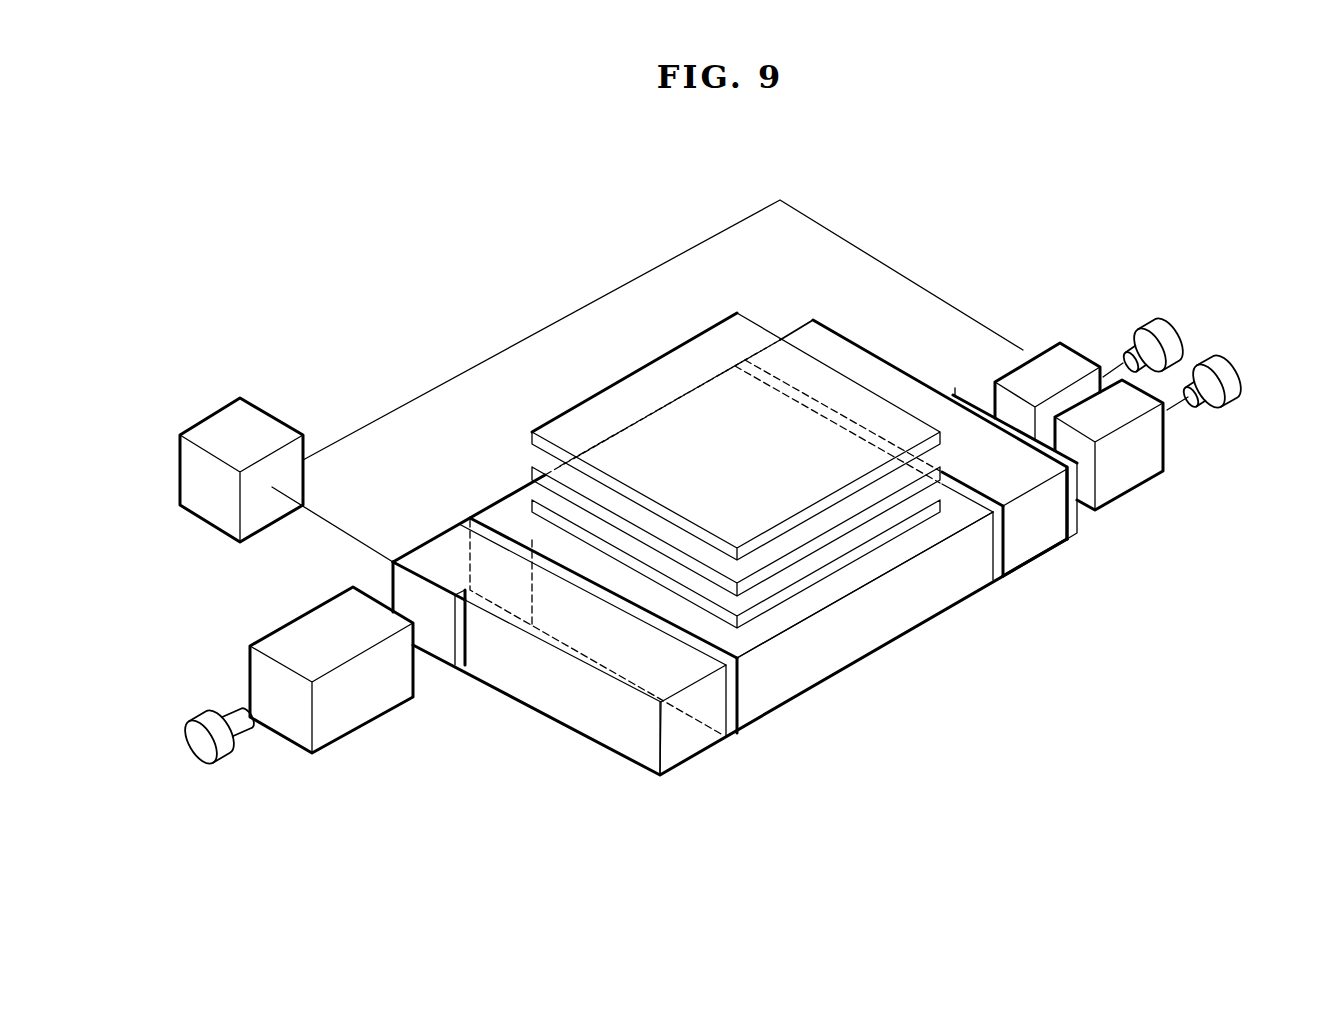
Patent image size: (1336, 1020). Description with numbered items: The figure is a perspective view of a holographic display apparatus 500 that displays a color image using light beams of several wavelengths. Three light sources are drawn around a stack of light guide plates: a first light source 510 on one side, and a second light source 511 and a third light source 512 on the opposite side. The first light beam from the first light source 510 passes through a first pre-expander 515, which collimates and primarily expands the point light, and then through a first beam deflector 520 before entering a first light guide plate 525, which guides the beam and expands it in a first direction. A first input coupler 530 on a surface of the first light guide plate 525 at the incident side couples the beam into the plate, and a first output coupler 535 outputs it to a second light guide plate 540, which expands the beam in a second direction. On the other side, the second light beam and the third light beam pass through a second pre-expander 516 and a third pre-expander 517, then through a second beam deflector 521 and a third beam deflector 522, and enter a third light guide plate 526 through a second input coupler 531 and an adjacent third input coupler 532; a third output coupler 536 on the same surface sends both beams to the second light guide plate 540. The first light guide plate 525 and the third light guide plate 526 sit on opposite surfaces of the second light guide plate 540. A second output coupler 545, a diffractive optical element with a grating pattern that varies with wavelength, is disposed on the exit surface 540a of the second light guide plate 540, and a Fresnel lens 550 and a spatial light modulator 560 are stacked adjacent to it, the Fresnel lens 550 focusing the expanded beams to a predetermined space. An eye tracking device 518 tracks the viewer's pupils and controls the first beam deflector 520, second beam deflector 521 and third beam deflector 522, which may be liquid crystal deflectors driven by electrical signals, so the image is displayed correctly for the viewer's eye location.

The holographic display apparatus 500 is at (360, 305).
The first light source 510 is at (208, 723).
The second light source 511 is at (1220, 360).
The third light source 512 is at (1153, 327).
The first pre-expander 515 is at (312, 620).
The second pre-expander 516 is at (1132, 480).
The third pre-expander 517 is at (1048, 357).
The eye tracking device 518 is at (220, 417).
The first beam deflector 520 is at (445, 655).
The second beam deflector 521 is at (1072, 522).
The third beam deflector 522 is at (955, 397).
The first light guide plate 525 is at (677, 748).
The third light guide plate 526 is at (1038, 545).
The first input coupler 530 is at (473, 513).
The second input coupler 531 is at (1000, 570).
The third input coupler 532 is at (885, 443).
The first output coupler 535 is at (728, 693).
The third output coupler 536 is at (787, 382).
The second light guide plate 540 is at (877, 630).
The exit surface 540a is at (887, 550).
The second output coupler 545 is at (533, 503).
The Fresnel lens 550 is at (532, 468).
The spatial light modulator 560 is at (532, 435).